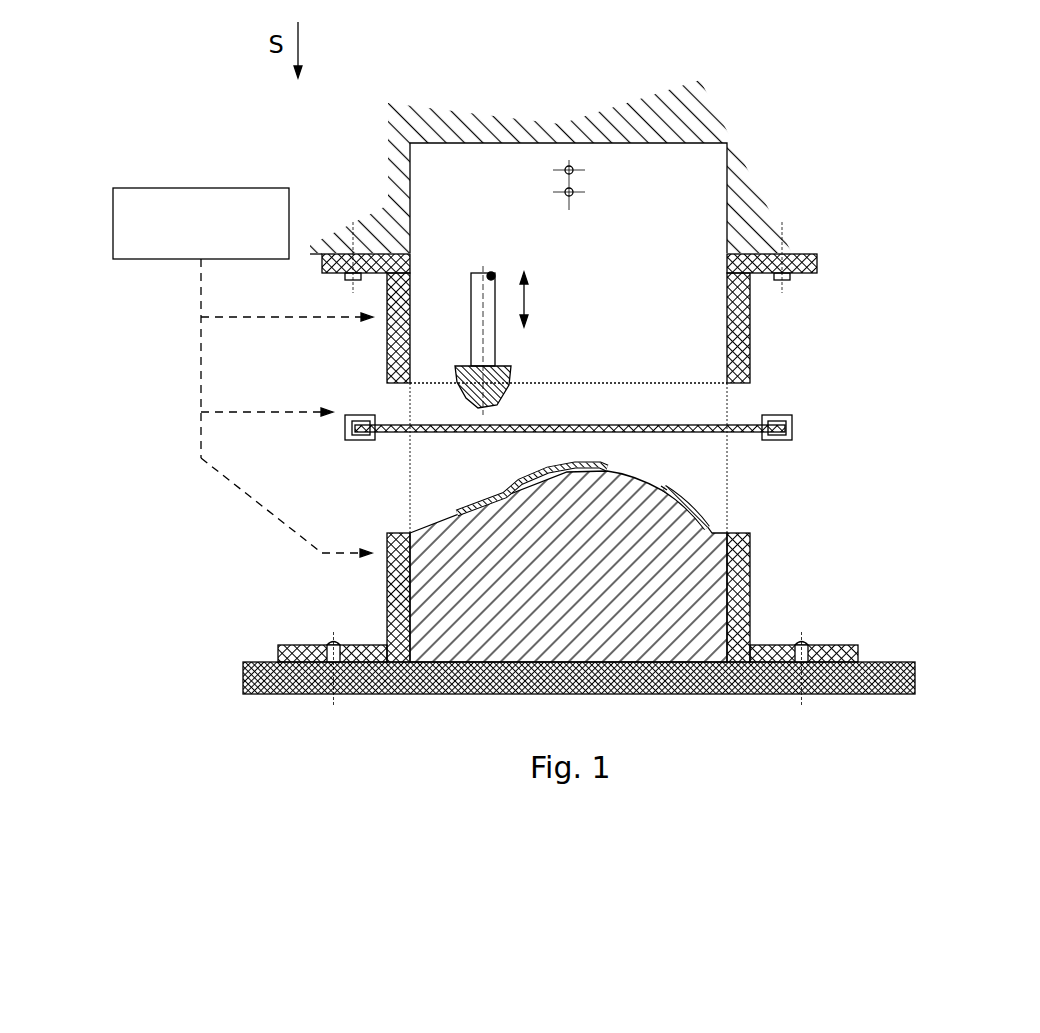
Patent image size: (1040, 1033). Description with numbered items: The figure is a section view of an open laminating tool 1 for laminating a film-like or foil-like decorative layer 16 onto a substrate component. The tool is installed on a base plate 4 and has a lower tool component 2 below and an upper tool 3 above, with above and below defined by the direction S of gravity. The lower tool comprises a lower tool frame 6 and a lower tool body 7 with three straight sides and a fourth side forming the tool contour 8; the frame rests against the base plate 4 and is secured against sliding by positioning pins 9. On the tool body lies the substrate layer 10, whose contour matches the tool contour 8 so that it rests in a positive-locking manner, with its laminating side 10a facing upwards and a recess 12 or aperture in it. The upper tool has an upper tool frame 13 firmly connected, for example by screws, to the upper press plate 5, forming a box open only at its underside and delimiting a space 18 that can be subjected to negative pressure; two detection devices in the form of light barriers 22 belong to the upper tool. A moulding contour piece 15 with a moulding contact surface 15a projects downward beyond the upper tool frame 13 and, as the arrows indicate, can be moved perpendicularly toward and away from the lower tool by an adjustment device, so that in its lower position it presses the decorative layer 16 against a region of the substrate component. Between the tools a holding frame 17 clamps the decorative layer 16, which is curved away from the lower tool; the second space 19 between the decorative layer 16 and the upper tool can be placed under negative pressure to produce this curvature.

The laminating tool 1 is at (935, 378).
The lower tool component 2 is at (256, 538).
The upper tool 3 is at (864, 140).
The base plate 4 is at (390, 685).
The upper press plate 5 is at (755, 227).
The lower tool frame 6 is at (750, 600).
The lower tool body 7 is at (465, 566).
The tool contour 8 is at (445, 518).
The positioning pins 9 is at (338, 643).
The substrate layer 10 is at (704, 512).
The laminating side 10a is at (665, 489).
The recess 12 is at (658, 478).
The upper tool frame 13 is at (392, 262).
The moulding contour piece 15 is at (455, 372).
The moulding contact surface 15a is at (496, 408).
The decorative layer 16 is at (746, 425).
The holding frame 17 is at (795, 420).
The space 18 is at (460, 186).
The second space 19 is at (697, 472).
The light barriers 22 is at (573, 167).